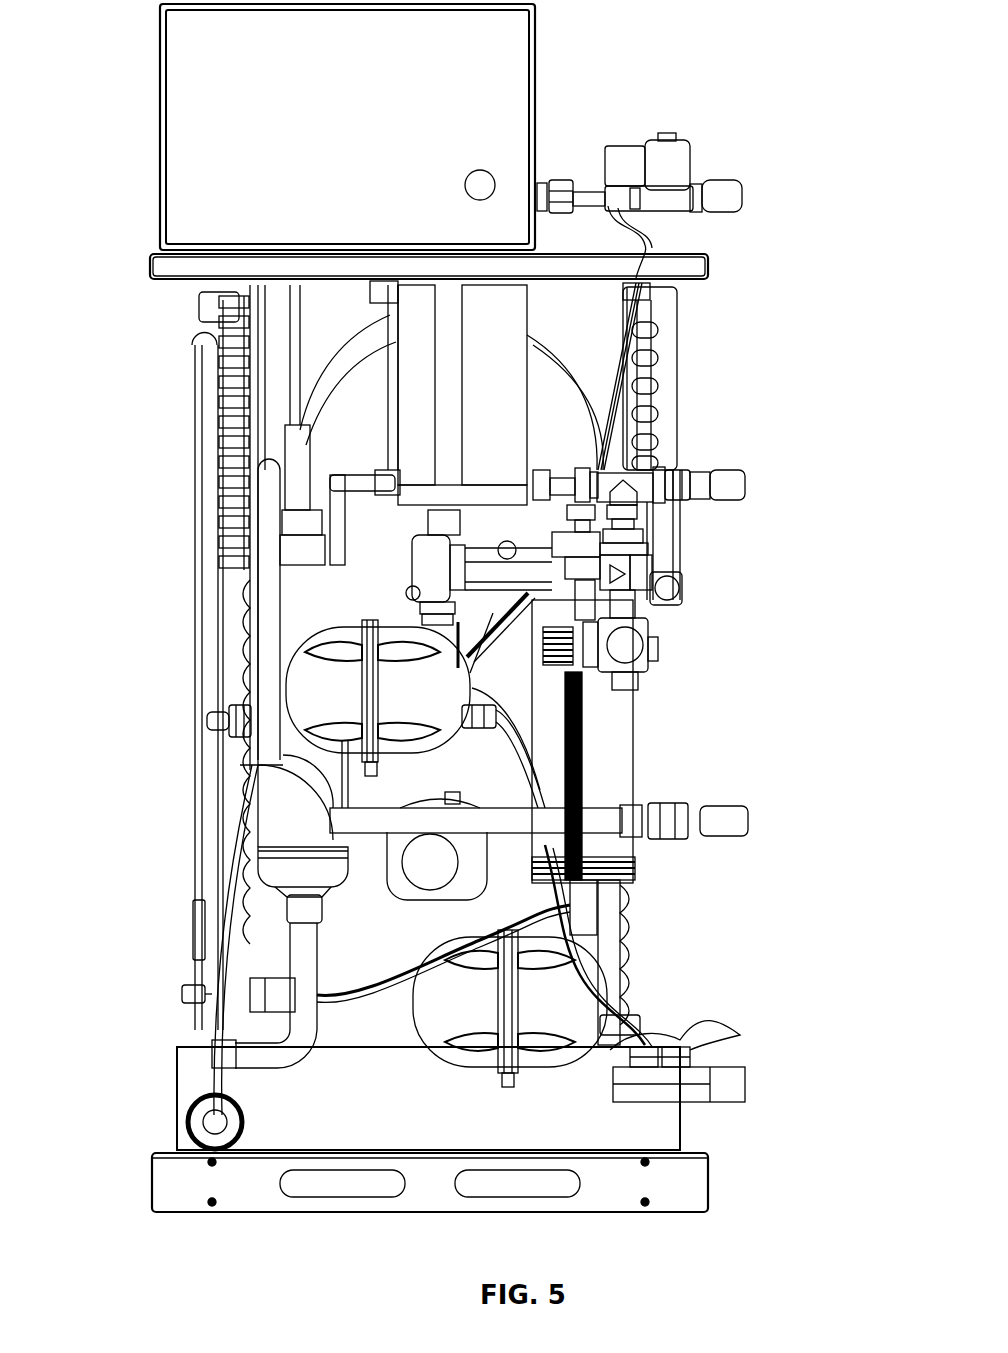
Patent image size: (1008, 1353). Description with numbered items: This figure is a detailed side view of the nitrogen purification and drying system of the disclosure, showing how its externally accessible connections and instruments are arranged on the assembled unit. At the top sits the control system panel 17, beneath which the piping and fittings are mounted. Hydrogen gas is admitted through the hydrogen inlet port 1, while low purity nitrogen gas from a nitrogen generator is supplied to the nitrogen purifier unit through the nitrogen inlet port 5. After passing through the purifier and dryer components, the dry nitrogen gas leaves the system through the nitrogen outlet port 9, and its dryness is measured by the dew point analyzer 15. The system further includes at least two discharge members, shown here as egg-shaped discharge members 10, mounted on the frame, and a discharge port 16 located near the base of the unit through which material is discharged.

The control system panel 17 is at (160, 128).
The hydrogen inlet port 1 is at (748, 195).
The nitrogen outlet port 9 is at (752, 480).
The dew point analyzer 15 is at (412, 572).
The nitrogen inlet port 5 is at (752, 812).
The egg-shaped discharge member 10 is at (430, 1007).
The discharge port 16 is at (752, 1078).